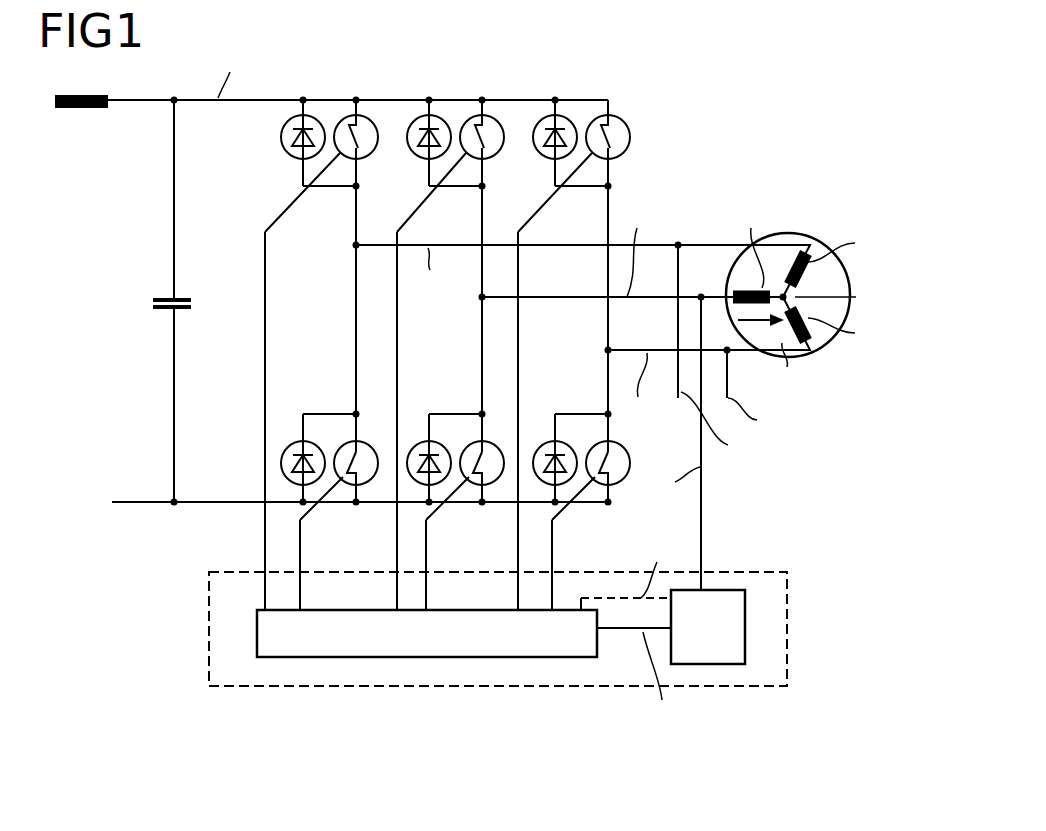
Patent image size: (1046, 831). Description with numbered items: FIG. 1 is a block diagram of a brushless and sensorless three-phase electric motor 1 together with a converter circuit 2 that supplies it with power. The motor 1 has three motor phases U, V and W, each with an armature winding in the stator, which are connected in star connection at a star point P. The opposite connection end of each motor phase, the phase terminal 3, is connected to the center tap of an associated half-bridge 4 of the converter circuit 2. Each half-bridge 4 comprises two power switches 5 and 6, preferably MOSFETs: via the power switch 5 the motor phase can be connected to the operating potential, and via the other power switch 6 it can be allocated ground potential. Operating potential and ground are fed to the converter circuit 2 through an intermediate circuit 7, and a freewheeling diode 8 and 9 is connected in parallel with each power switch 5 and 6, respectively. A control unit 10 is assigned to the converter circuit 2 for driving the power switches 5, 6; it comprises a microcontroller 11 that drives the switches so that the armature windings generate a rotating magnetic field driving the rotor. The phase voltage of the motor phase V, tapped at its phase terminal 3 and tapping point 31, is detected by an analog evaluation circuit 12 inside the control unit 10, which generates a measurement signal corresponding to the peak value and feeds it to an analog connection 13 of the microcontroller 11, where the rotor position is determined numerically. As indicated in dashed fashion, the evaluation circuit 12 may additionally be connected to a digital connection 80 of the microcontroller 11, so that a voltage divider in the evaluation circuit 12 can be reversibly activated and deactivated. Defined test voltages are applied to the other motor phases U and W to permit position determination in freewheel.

The electric motor 1 is at (749, 160).
The converter circuit 2 is at (505, 48).
The phase terminal 3 is at (354, 248).
The half-bridge 4 is at (355, 346).
The power switch 5 is at (352, 98).
The power switch 6 is at (365, 484).
The intermediate circuit 7 is at (205, 104).
The freewheeling diode 8 is at (298, 100).
The freewheeling diode 9 is at (291, 484).
The control unit 10 is at (530, 633).
The microcontroller 11 is at (472, 658).
The evaluation circuit 12 is at (730, 590).
The analog connection 13 is at (606, 637).
The tapping point 31 is at (701, 296).
The digital connection 80 is at (581, 597).